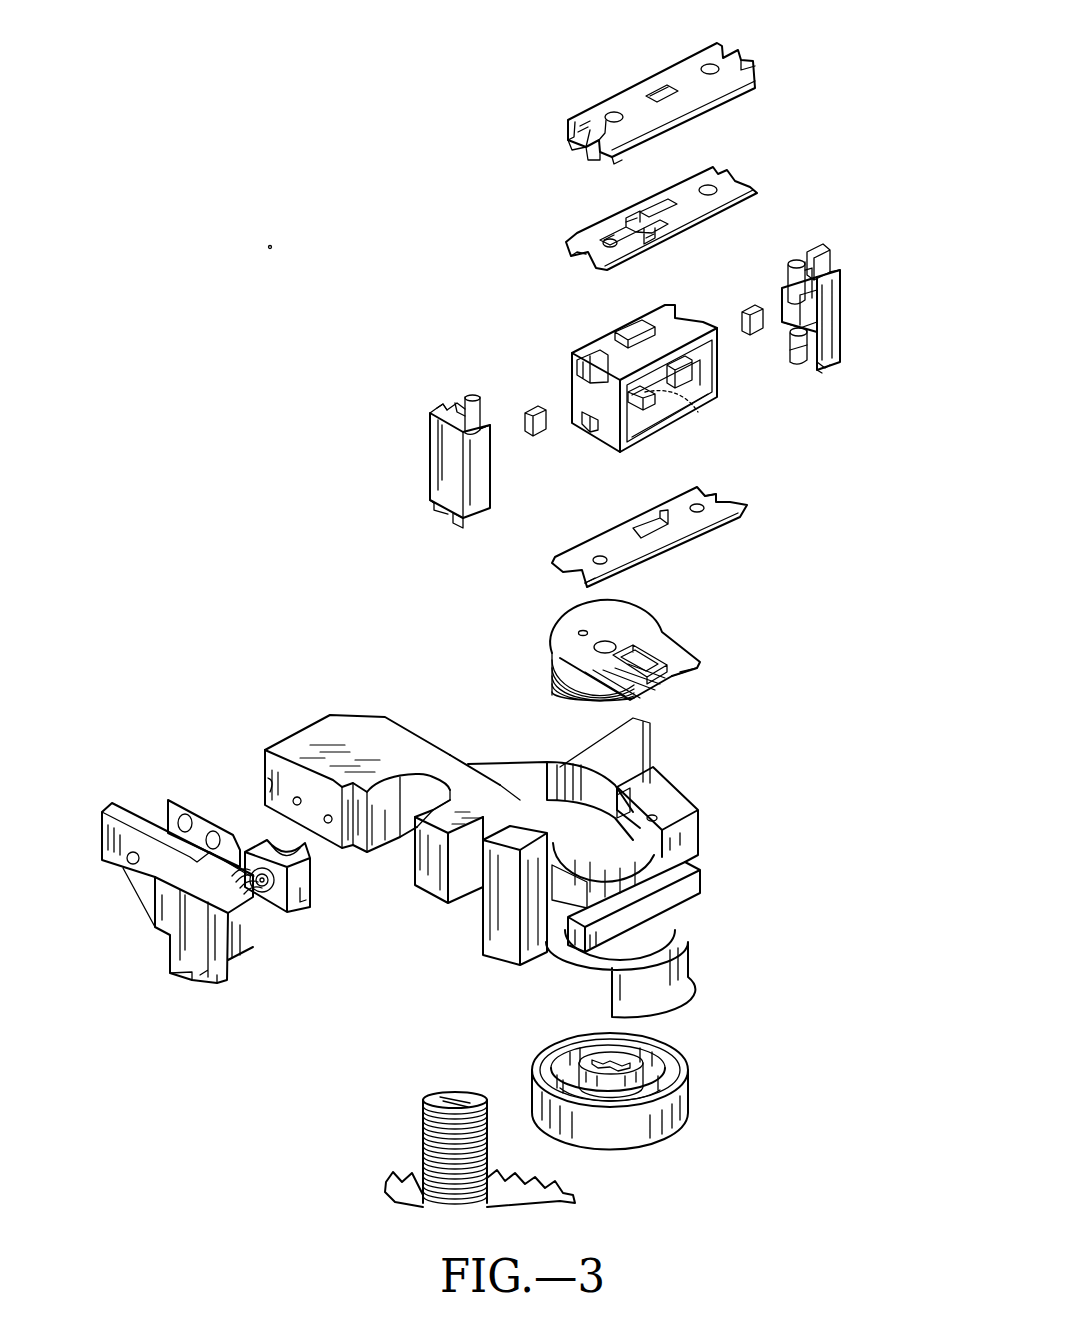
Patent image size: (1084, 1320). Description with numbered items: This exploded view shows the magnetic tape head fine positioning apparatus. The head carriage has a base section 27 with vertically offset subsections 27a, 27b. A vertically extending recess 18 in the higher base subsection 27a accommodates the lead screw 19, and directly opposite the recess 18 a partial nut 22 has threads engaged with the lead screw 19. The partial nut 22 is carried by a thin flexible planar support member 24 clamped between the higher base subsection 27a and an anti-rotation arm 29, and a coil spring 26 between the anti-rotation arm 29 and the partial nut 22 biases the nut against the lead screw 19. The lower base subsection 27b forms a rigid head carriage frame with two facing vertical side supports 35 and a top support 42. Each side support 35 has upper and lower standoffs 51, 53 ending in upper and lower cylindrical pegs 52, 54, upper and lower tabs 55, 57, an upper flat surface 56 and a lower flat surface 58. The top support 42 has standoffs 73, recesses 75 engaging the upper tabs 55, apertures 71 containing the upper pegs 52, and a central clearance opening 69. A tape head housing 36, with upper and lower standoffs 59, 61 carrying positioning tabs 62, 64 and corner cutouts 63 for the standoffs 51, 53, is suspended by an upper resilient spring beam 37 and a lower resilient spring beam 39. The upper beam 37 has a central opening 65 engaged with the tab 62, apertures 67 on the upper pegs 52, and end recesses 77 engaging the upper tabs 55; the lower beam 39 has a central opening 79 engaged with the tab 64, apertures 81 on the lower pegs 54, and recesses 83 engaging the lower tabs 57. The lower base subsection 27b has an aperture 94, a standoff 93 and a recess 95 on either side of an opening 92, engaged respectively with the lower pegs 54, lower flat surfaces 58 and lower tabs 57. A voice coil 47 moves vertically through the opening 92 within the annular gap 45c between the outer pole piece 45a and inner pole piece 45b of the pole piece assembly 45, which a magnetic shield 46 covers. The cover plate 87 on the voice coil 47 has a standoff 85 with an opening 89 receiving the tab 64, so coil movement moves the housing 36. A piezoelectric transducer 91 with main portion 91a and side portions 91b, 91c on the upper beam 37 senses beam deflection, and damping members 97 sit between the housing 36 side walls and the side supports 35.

The vertically extending recess 18 is at (416, 792).
The lead screw 19 is at (440, 1098).
The partial nut 22 is at (310, 885).
The thin flexible planar support member 24 is at (170, 808).
The coil spring 26 is at (262, 900).
The base section 27 is at (712, 877).
The higher base subsection 27a is at (358, 735).
The lower base subsection 27b is at (672, 883).
The anti-rotation arm 29 is at (118, 867).
The vertical side support 35 is at (422, 459).
The tape head housing 36 is at (572, 440).
The upper resilient spring beam 37 is at (740, 188).
The lower resilient spring beam 39 is at (738, 497).
The top support 42 is at (592, 98).
The annular pole piece assembly 45 is at (707, 1100).
The outer pole piece 45a is at (562, 1062).
The inner pole piece 45b is at (630, 1060).
The annular gap 45c is at (592, 1052).
The magnetic shield 46 is at (686, 950).
The voice coil 47 is at (568, 693).
The upper standoff 51 is at (472, 395).
The upper cylindrical peg 52 is at (462, 405).
The lower standoff 53 is at (790, 340).
The lower cylindrical peg 54 is at (798, 360).
The upper tab 55 is at (437, 420).
The upper flat surface 56 is at (480, 430).
The lower tab 57 is at (448, 518).
The lower flat surface 58 is at (430, 503).
The upper standoff 59 is at (690, 398).
The lower standoff 61 is at (665, 430).
The upper spring beam positioning tab 62 is at (638, 330).
The cutouts 63 is at (588, 360).
The lower spring beam positioning tab 64 is at (704, 418).
The central opening 65 is at (642, 212).
The apertures 67 is at (710, 185).
The clearance opening 69 is at (652, 92).
The apertures 71 is at (710, 64).
The standoffs 73 is at (612, 166).
The recesses 75 is at (568, 147).
The recesses 77 is at (570, 245).
The central opening 79 is at (660, 540).
The apertures 81 is at (706, 510).
The recesses 83 is at (705, 497).
The standoff 85 is at (675, 662).
The cover plate 87 is at (680, 663).
The opening 89 is at (658, 677).
The piezoelectric transducer 91 is at (655, 236).
The main portion 91a is at (630, 225).
The side portion 91b is at (648, 240).
The side portion 91c is at (612, 234).
The opening 92 is at (552, 785).
The standoff 93 is at (700, 818).
The aperture 94 is at (556, 878).
The recess 95 is at (648, 790).
The damping members 97 is at (530, 405).